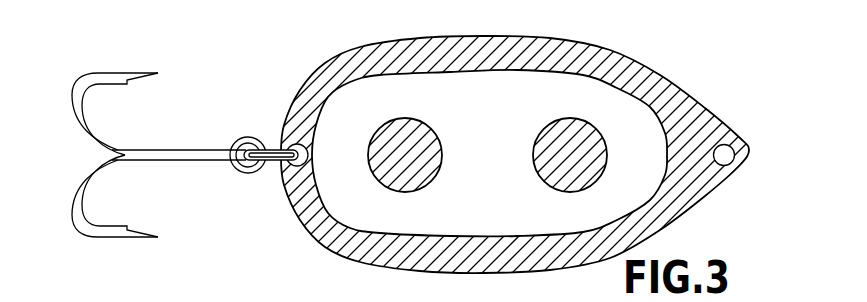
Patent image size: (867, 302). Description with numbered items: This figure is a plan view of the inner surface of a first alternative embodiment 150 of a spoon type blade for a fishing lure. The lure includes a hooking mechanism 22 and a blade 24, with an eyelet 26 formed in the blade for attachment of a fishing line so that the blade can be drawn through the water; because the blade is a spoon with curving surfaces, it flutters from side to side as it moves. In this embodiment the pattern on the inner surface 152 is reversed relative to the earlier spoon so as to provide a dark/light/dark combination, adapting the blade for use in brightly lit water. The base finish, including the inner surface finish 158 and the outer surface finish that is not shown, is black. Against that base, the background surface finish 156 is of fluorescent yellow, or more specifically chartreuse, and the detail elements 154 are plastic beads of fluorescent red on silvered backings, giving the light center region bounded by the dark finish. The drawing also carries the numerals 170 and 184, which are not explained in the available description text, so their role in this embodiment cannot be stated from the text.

The first alternative embodiment 150 is at (104, 268).
The hooking mechanism 22 is at (194, 150).
The blade 24 is at (302, 256).
The inner surface 152 is at (607, 50).
The inner surface finish 158 is at (370, 60).
The background surface finish 156 is at (508, 112).
The detail elements 154 is at (535, 172).
The eyelet 26 is at (736, 148).
The lure element 170 is at (550, 295).
The lure element 184 is at (809, 299).